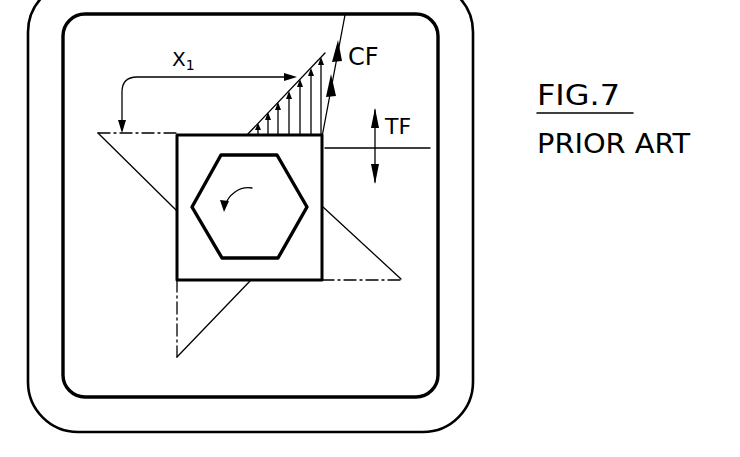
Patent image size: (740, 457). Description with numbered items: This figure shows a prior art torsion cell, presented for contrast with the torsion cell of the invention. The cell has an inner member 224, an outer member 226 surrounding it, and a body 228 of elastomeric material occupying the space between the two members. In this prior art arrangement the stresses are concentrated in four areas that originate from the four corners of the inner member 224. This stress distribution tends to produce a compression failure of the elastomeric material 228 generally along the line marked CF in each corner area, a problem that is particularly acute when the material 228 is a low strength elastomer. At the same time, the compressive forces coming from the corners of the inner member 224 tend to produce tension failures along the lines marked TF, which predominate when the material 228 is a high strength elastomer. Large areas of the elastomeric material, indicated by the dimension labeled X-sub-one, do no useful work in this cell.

The inner member 224 is at (283, 262).
The outer member 226 is at (453, 353).
The body of elastomeric material 228 is at (413, 313).